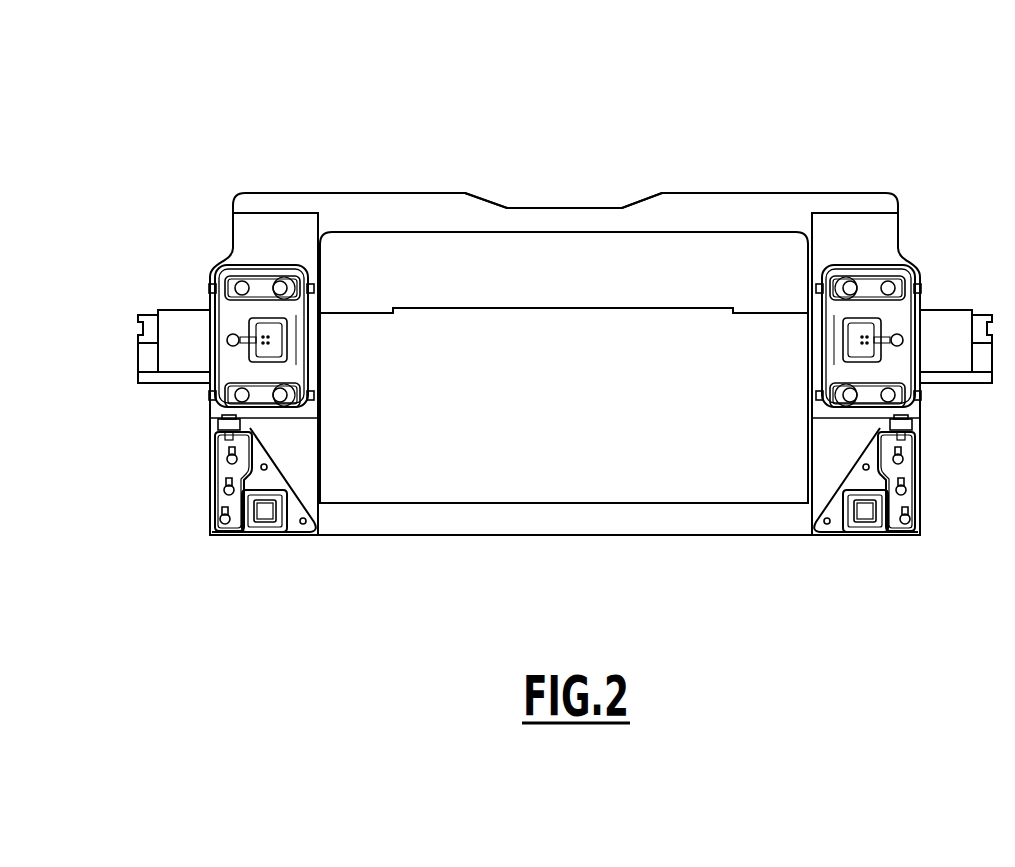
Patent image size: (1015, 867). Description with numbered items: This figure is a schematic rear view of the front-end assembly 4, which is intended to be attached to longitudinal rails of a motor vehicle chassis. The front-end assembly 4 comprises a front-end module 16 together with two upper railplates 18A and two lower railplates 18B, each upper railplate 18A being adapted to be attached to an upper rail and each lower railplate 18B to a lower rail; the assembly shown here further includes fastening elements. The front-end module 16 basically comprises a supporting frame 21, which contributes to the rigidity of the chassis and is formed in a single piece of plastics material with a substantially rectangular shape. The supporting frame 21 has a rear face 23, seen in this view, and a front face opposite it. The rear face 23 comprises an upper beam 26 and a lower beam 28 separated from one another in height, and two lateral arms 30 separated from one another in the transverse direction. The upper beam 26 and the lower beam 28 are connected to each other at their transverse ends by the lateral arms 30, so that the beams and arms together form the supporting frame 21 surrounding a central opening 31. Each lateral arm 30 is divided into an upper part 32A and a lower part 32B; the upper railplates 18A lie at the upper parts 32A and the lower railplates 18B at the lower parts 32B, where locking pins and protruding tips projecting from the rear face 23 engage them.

The front-end assembly 4 is at (166, 188).
The front-end module 16 is at (243, 193).
The supporting frame 21 is at (355, 193).
The rear face 23 is at (797, 217).
The upper beam 26 is at (433, 213).
The lower beam 28 is at (452, 517).
The central opening 31 is at (673, 457).
The upper part 32A is at (262, 238).
The lower part 32B is at (300, 440).
The lateral arm 30 is at (213, 405).
The upper railplate 18A is at (293, 317).
The lower railplate 18B is at (279, 486).